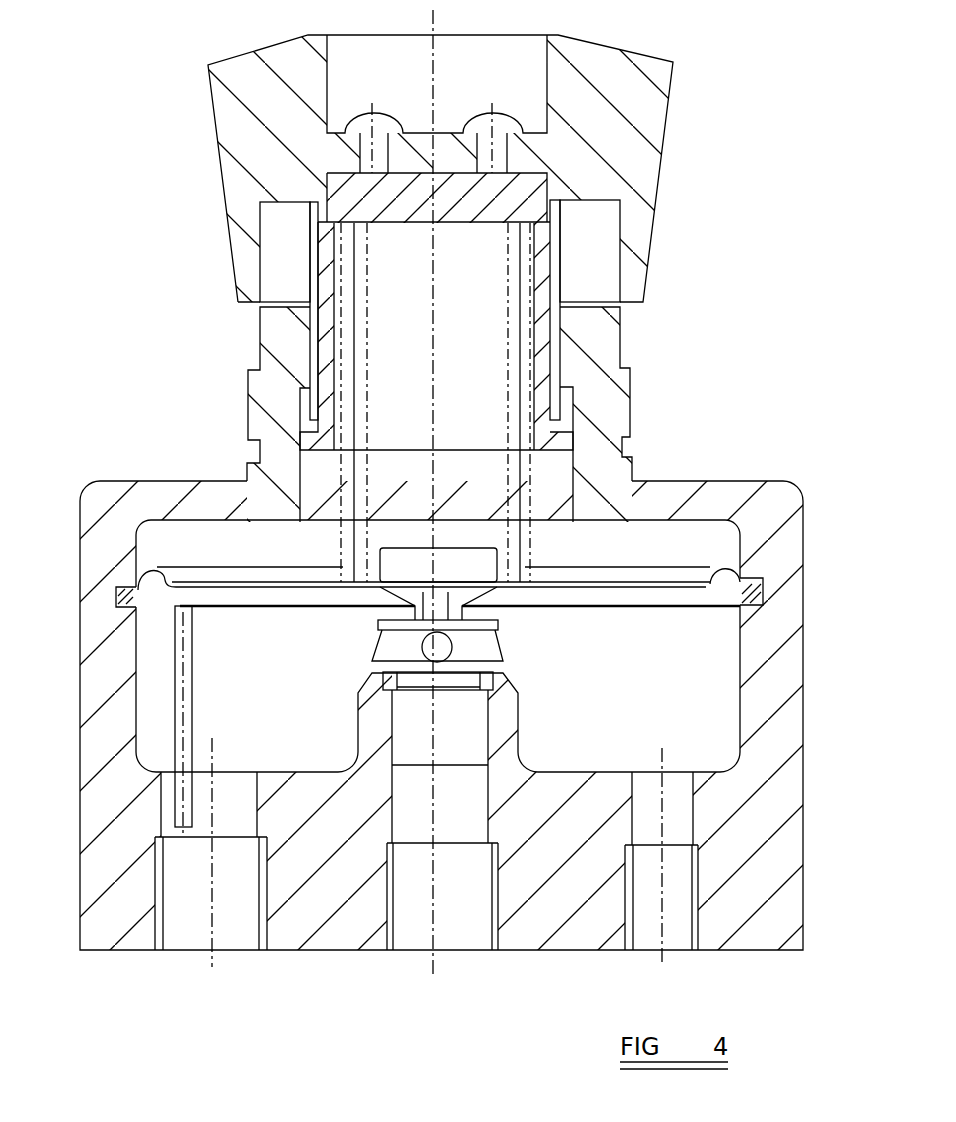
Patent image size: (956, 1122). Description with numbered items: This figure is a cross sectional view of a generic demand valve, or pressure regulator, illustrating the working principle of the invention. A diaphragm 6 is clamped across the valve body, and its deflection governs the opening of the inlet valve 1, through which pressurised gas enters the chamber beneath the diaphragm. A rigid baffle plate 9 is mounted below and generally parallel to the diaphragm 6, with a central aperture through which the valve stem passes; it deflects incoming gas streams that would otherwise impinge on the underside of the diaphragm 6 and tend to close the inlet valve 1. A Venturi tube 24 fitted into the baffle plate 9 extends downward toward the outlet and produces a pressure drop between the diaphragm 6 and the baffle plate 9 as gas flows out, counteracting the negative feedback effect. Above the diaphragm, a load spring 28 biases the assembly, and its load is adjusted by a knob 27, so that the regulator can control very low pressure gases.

The inlet valve 1 is at (487, 697).
The diaphragm 6 is at (117, 593).
The baffle plate 9 is at (677, 608).
The Venturi tube 24 is at (172, 678).
The knob 27 is at (648, 124).
The load spring 28 is at (332, 277).